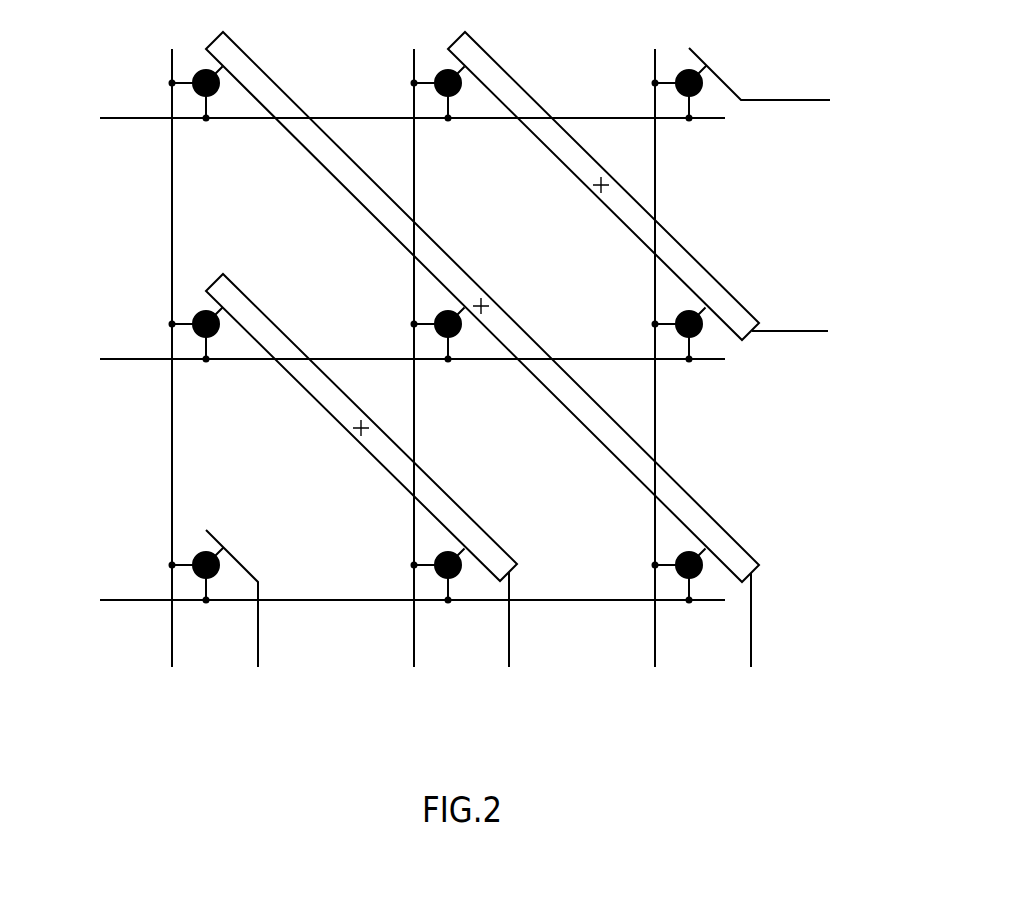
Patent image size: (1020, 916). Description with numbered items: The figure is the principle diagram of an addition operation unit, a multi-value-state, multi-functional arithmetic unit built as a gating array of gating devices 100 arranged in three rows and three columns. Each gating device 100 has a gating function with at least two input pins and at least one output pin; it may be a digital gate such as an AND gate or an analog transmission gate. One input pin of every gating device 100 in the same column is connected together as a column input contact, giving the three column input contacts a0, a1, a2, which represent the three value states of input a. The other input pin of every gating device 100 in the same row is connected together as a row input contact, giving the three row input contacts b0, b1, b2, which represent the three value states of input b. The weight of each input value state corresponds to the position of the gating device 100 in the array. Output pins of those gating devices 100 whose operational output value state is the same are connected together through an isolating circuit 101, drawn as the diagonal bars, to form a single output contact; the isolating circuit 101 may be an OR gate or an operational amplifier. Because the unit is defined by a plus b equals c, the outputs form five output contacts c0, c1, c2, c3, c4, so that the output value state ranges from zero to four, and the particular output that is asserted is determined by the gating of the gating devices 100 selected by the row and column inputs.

The gating device 100 is at (703, 563).
The isolating circuit 101 is at (690, 280).
The column input contact a0 is at (173, 373).
The column input contact a1 is at (415, 373).
The column input contact a2 is at (656, 373).
The row input contact b0 is at (394, 600).
The row input contact b1 is at (394, 359).
The row input contact b2 is at (394, 118).
The output contact c0 is at (239, 613).
The output contact c1 is at (509, 634).
The output contact c2 is at (752, 635).
The output contact c3 is at (810, 331).
The output contact c4 is at (779, 79).